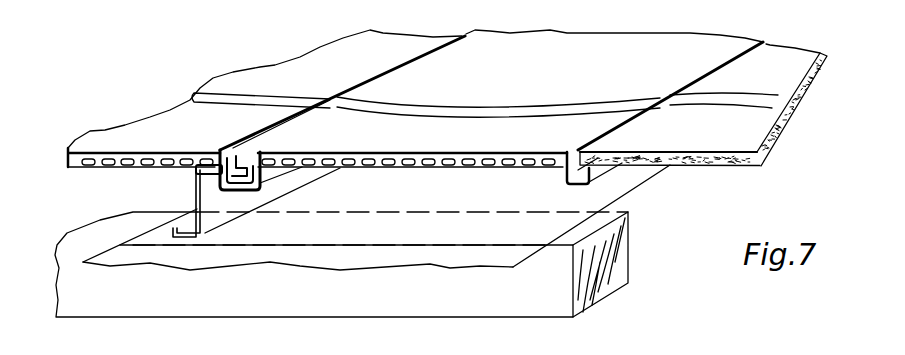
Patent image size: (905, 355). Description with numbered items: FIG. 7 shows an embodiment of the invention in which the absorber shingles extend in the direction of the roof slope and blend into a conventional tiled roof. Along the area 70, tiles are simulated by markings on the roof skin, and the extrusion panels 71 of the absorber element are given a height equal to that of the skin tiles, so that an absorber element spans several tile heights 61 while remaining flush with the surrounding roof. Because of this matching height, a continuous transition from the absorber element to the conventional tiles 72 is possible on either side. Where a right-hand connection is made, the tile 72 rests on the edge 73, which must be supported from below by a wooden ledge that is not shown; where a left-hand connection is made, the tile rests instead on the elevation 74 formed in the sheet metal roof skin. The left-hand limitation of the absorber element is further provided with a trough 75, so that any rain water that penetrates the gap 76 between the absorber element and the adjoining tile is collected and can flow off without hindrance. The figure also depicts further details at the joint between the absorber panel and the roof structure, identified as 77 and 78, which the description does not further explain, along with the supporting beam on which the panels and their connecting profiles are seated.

The tile heights 61 is at (605, 288).
The area 70 is at (667, 97).
The extrusion panels 71 is at (447, 168).
The conventional tiles 72 is at (703, 166).
The edge 73 is at (577, 186).
The elevation 74 is at (185, 152).
The trough 75 is at (238, 189).
The gap 76 is at (263, 128).
The curved stiffening rib 77 is at (519, 110).
The mounting bracket 78 is at (194, 197).